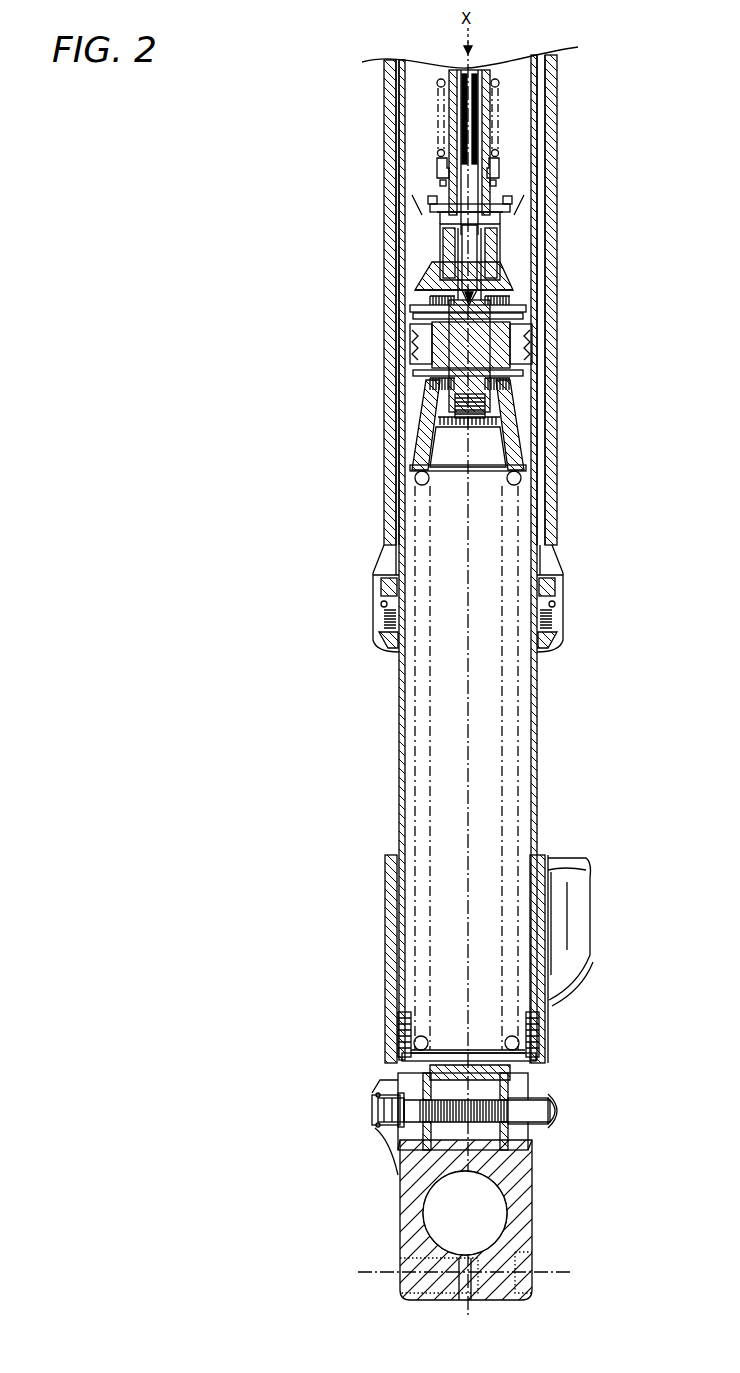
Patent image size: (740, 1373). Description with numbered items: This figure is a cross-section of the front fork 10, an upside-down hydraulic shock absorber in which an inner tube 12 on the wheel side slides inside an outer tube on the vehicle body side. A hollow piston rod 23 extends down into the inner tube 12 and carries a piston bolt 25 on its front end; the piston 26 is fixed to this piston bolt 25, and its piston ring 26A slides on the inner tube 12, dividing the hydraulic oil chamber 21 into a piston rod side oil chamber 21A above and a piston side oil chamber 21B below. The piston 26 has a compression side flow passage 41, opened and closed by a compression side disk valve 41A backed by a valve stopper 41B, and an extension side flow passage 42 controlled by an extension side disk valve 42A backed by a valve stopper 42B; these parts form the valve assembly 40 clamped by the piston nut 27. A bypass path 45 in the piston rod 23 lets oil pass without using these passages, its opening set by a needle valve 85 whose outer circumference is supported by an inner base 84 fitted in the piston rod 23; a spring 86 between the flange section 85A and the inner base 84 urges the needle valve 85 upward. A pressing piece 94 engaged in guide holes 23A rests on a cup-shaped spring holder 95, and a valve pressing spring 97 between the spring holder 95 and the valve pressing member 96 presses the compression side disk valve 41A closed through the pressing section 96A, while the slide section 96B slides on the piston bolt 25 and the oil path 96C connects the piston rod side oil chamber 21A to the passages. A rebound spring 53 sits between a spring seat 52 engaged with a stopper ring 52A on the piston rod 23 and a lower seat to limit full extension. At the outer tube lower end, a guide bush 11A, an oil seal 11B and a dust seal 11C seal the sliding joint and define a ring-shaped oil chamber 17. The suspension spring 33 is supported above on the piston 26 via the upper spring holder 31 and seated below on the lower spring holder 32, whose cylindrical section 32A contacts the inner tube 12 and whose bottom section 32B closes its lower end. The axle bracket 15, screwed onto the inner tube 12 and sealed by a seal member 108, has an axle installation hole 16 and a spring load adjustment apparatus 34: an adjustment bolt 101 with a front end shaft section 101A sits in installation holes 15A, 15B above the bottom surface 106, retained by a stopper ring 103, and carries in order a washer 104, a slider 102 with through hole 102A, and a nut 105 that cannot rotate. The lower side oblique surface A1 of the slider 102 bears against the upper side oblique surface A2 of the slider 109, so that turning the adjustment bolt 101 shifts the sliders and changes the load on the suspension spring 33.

The front fork 10 is at (542, 28).
The hydraulic oil chamber 21 is at (422, 88).
The piston rod side oil chamber 21A is at (418, 128).
The piston side oil chamber 21B is at (440, 495).
The inner tube 12 is at (536, 729).
The suspension spring 33 is at (522, 700).
The piston rod 23 is at (488, 97).
The pressing piece 94 is at (487, 178).
The spring holder 95 is at (503, 213).
The guide holes 23A is at (514, 215).
The rebound spring 53 is at (437, 153).
The spring seat 52 is at (437, 171).
The stopper ring 52A is at (440, 191).
The valve pressing spring 97 is at (420, 224).
The spring 86 is at (496, 245).
The inner base 84 is at (497, 265).
The needle valve 85 is at (503, 292).
The flange section 85A is at (498, 226).
The piston bolt 25 is at (545, 235).
The valve pressing member 96 is at (422, 272).
The pressing section 96A is at (428, 268).
The oil path 96C is at (418, 285).
The slide section 96B is at (415, 310).
The valve stopper 41B is at (430, 300).
The valve assembly 40 is at (522, 308).
The compression side disk valve 41A is at (415, 317).
The compression side flow passage 41 is at (432, 338).
The piston ring 26A is at (528, 348).
The piston 26 is at (533, 332).
The extension side flow passage 42 is at (522, 372).
The extension side disk valve 42A is at (510, 383).
The valve stopper 42B is at (486, 404).
The piston nut 27 is at (512, 412).
The bypass path 45 is at (502, 422).
The upper spring holder 31 is at (520, 452).
The ring-shaped oil chamber 17 is at (397, 505).
The guide bush 11A is at (395, 553).
The oil seal 11B is at (392, 604).
The dust seal 11C is at (385, 648).
The axle bracket 15 is at (544, 853).
The seal member 108 is at (400, 1018).
The lower spring holder 32 is at (540, 1010).
The cylindrical section 32A is at (538, 1030).
The upper side oblique surface A2 is at (470, 1072).
The lower side oblique surface A1 is at (483, 1072).
The bottom section 32B is at (515, 1072).
The slider 102 is at (500, 1150).
The slider 109 is at (507, 1082).
The nut 105 is at (508, 1140).
The through hole 102A is at (520, 1128).
The front end shaft section 101A is at (550, 1110).
The installation hole 15A is at (553, 1112).
The installation hole 15B is at (377, 1103).
The spring load adjustment apparatus 34 is at (375, 1112).
The adjustment bolt 101 is at (380, 1122).
The stopper ring 103 is at (398, 1128).
The washer 104 is at (398, 1130).
The axle installation hole 16 is at (505, 1212).
The bottom surface 106 is at (508, 1160).